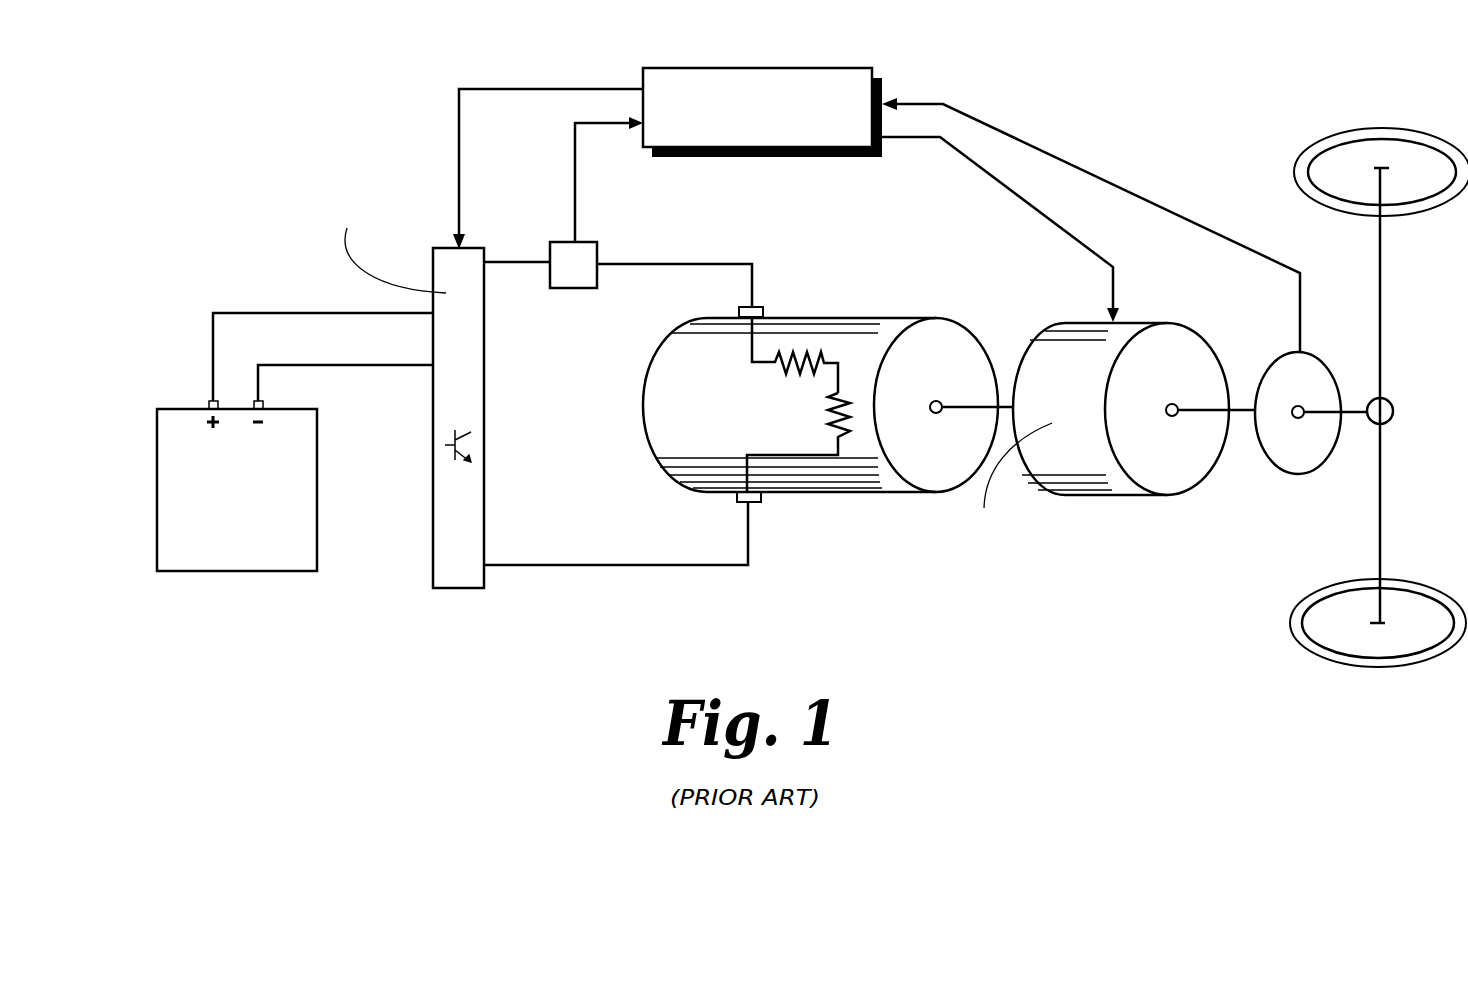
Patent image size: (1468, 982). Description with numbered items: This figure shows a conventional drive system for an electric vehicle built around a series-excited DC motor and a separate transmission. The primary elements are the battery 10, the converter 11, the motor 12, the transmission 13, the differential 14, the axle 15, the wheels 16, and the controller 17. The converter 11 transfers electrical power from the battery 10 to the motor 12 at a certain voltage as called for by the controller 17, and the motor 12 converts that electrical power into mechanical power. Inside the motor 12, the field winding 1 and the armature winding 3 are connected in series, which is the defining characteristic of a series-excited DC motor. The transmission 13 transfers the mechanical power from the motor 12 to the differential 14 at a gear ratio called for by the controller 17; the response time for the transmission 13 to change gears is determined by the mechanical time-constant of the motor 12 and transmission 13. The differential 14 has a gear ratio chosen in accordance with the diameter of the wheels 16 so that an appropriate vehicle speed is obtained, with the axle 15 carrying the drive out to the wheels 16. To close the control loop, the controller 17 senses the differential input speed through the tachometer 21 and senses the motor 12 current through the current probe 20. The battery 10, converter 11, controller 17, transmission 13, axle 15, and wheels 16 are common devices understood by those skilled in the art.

The field winding 1 is at (770, 372).
The armature winding 3 is at (836, 414).
The battery 10 is at (267, 563).
The converter 11 is at (475, 575).
The motor 12 is at (853, 468).
The transmission 13 is at (1100, 472).
The differential 14 is at (1370, 440).
The axle 15 is at (1380, 510).
The wheels 16 is at (1383, 128).
The controller 17 is at (815, 138).
The current probe 20 is at (583, 260).
The tachometer 21 is at (1315, 390).